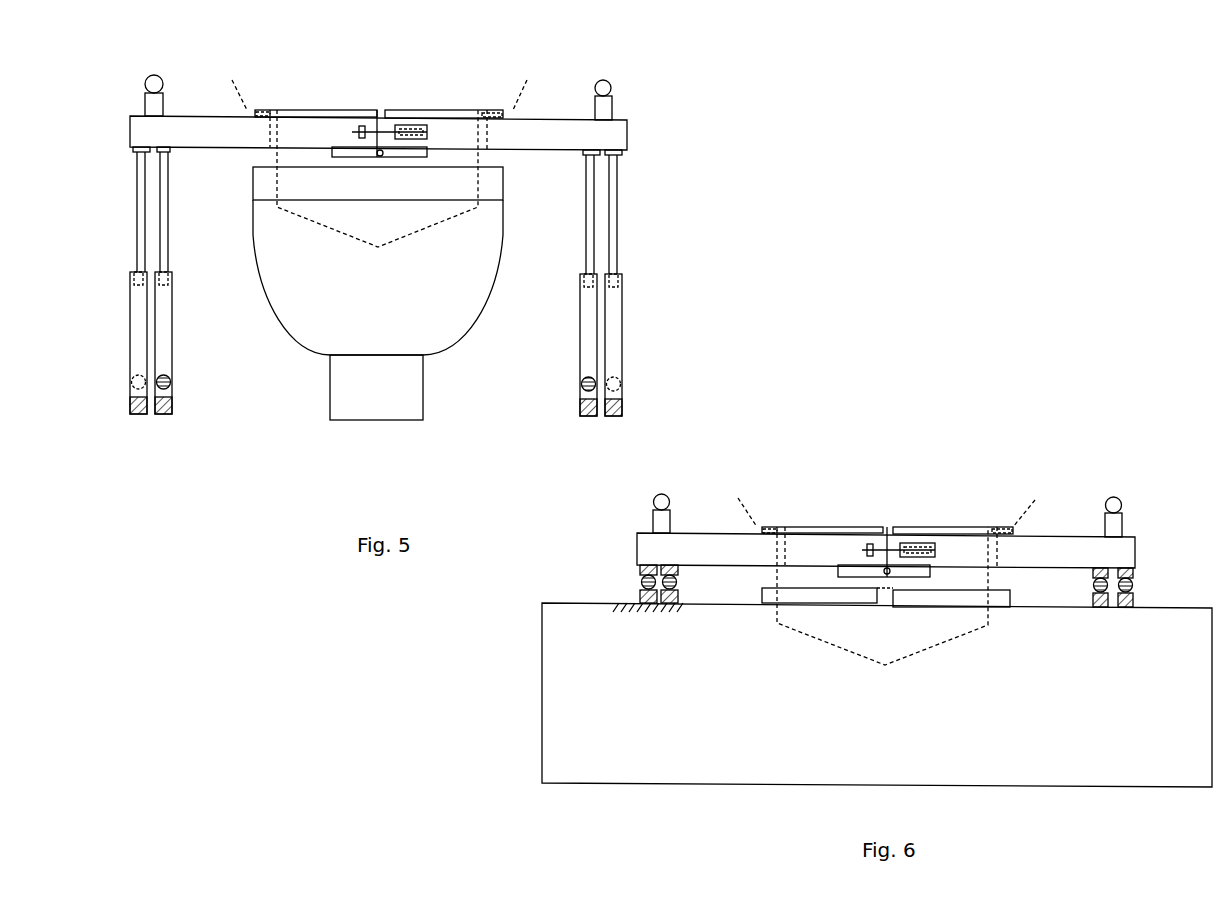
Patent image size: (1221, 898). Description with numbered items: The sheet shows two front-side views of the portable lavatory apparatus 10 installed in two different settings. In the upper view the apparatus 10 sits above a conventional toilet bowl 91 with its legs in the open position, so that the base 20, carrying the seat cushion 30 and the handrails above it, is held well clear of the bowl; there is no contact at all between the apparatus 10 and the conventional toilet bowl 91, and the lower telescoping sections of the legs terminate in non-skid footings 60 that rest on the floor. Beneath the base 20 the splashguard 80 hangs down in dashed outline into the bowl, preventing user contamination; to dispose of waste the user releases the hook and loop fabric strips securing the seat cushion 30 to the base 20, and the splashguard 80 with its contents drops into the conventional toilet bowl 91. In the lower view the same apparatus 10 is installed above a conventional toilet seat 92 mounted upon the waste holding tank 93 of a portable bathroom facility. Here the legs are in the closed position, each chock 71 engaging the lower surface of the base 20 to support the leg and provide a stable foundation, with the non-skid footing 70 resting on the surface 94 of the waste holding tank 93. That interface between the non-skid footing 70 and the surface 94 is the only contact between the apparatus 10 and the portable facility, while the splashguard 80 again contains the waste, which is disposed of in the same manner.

In FIG. 5, the portable lavatory apparatus 10 is at (712, 136).
In FIG. 6, the portable lavatory apparatus 10 is at (1109, 424).
In FIG. 5, the base 20 is at (549, 120).
In FIG. 6, the base 20 is at (700, 533).
In FIG. 5, the seat cushion 30 is at (426, 110).
In FIG. 6, the seat cushion 30 is at (824, 527).
In FIG. 6, the non-skid footing 60 is at (1135, 585).
In FIG. 6, the non-skid footing 70 is at (1123, 606).
In FIG. 6, the chock 71 is at (1135, 572).
In FIG. 5, the splashguard 80 is at (236, 86).
In FIG. 6, the splashguard 80 is at (948, 650).
In FIG. 5, the conventional toilet bowl 91 is at (474, 327).
In FIG. 6, the conventional toilet seat 92 is at (777, 597).
In FIG. 6, the waste holding tank 93 is at (542, 657).
In FIG. 6, the surface of waste holding tank 94 is at (630, 603).